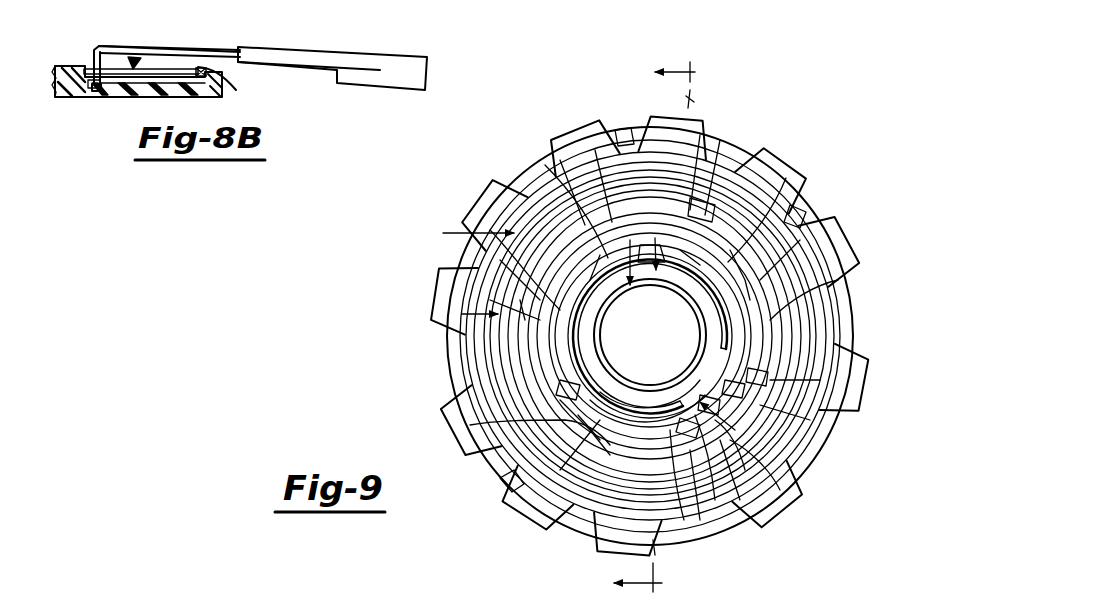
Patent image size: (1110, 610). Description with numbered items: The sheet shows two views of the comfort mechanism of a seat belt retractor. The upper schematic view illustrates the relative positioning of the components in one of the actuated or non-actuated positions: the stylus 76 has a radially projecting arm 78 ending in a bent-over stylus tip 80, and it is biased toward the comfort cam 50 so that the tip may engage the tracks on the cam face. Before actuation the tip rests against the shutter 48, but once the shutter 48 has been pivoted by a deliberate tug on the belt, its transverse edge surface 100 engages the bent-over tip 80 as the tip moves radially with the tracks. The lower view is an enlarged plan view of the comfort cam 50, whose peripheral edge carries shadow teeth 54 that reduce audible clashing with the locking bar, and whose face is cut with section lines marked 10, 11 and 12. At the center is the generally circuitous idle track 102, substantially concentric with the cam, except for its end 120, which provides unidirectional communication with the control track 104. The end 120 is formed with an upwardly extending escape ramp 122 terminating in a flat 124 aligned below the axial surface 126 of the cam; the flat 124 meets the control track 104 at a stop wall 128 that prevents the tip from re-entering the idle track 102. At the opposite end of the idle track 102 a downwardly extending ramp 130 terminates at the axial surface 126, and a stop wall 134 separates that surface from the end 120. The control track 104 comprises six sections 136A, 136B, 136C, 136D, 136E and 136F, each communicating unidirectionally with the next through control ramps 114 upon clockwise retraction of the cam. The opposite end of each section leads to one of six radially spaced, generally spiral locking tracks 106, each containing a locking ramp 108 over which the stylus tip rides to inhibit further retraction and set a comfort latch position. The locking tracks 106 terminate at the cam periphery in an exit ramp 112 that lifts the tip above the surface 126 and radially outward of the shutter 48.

In FIG. 8B, the shutter 48 is at (133, 60).
In FIG. 8B, the comfort cam 50 is at (107, 98).
In FIG. 9, the comfort cam 50 is at (427, 293).
In FIG. 9, the shadow teeth 54 is at (558, 133).
In FIG. 8B, the stylus 76 is at (404, 47).
In FIG. 8B, the radially projecting arm 78 is at (203, 52).
In FIG. 8B, the stylus tip 80 is at (92, 56).
In FIG. 8B, the transverse edge surface 100 is at (238, 82).
In FIG. 8B, the idle track 102 is at (92, 97).
In FIG. 9, the idle track 102 is at (672, 240).
In FIG. 9, the control track 104 is at (692, 426).
In FIG. 9, the locking tracks 106 is at (735, 390).
In FIG. 9, the locking ramp 108 is at (802, 214).
In FIG. 9, the exit ramp 112 is at (632, 133).
In FIG. 9, the control ramps 114 is at (702, 200).
In FIG. 9, the end of idle track 120 is at (612, 365).
In FIG. 9, the escape ramp 122 is at (612, 372).
In FIG. 9, the flat 124 is at (618, 390).
In FIG. 9, the axial surface 126 is at (725, 432).
In FIG. 9, the stop wall 128 is at (680, 432).
In FIG. 9, the downwardly extending ramp 130 is at (745, 335).
In FIG. 9, the stop wall 134 is at (700, 420).
In FIG. 9, the control track section 136A is at (792, 472).
In FIG. 9, the control track section 136B is at (838, 280).
In FIG. 9, the control track section 136C is at (784, 157).
In FIG. 9, the control track section 136D is at (555, 168).
In FIG. 9, the control track section 136E is at (565, 330).
In FIG. 9, the control track section 136F is at (540, 425).
In FIG. 9, the section line 10 is at (636, 332).
In FIG. 9, the section line 11 is at (656, 339).
In FIG. 9, the section line 12 is at (498, 290).